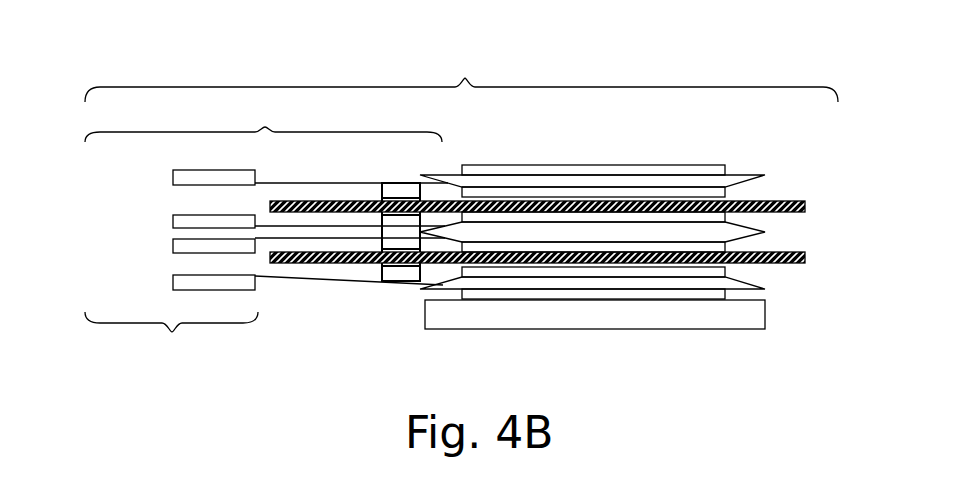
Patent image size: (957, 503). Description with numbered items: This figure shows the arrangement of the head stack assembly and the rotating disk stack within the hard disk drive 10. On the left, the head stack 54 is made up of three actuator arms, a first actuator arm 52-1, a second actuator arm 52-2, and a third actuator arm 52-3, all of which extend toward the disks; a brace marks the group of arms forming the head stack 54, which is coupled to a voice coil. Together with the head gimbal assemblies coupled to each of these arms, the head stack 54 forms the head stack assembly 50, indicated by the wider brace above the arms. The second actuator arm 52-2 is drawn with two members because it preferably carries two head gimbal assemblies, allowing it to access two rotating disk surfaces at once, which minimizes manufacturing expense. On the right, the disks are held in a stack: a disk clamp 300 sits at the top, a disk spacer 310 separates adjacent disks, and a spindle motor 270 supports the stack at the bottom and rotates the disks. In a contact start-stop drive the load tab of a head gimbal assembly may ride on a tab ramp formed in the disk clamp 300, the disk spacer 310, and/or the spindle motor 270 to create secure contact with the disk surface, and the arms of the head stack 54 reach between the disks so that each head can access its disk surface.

The hard disk drive 10 is at (461, 68).
The head stack assembly 50 is at (263, 118).
The first actuator arm 52-1 is at (268, 172).
The second actuator arm 52-2 is at (168, 215).
The third actuator arm 52-3 is at (266, 282).
The head stack 54 is at (171, 342).
The disk clamp 300 is at (649, 211).
The disk spacer 310 is at (813, 215).
The spindle motor 270 is at (577, 330).